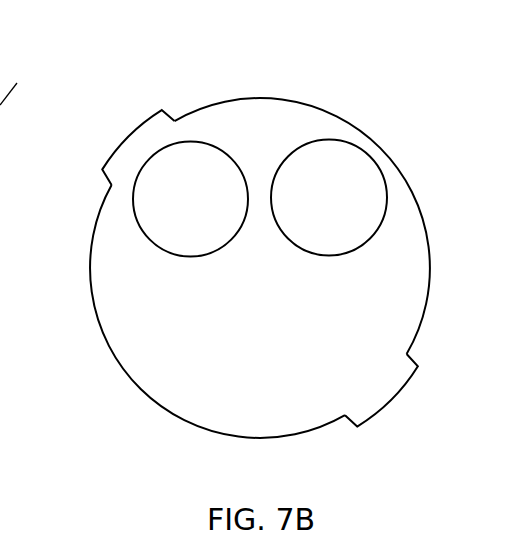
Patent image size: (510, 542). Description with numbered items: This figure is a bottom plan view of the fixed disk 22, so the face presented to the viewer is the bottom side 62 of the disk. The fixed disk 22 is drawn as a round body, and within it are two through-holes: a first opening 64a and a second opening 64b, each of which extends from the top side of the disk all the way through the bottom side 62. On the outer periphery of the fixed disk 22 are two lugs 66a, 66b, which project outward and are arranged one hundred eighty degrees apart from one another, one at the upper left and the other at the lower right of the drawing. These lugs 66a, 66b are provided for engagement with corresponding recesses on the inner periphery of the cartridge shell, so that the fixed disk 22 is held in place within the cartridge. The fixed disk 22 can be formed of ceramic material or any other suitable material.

The fixed disk 22 is at (353, 123).
The bottom side 62 is at (278, 234).
The first opening 64a is at (185, 260).
The second opening 64b is at (338, 138).
The lug 66a is at (132, 148).
The lug 66b is at (383, 387).